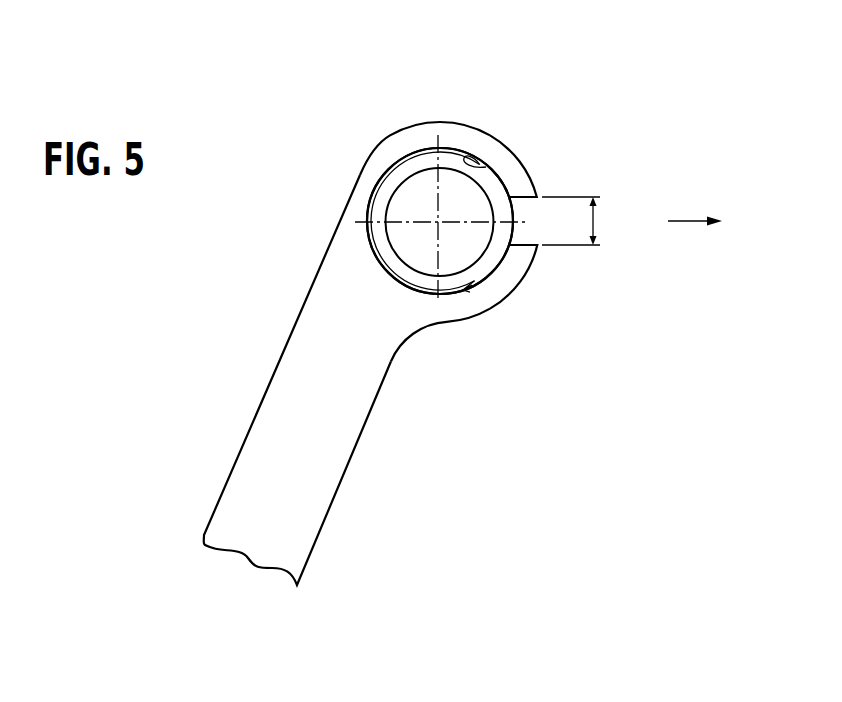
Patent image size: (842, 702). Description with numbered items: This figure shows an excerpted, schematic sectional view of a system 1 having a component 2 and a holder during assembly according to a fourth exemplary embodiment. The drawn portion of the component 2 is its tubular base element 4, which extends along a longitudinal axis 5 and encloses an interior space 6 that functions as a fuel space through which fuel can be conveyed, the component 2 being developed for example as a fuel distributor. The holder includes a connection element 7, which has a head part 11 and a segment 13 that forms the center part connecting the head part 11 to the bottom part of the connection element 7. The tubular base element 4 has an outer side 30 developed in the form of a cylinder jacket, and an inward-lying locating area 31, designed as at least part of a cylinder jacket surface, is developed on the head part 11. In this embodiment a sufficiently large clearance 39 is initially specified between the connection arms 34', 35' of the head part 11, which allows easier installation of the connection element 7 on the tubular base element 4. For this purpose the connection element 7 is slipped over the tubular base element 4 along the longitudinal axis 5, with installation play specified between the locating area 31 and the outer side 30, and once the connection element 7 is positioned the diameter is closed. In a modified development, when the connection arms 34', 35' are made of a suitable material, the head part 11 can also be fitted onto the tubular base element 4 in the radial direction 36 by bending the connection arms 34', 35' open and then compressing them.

The system 1 is at (676, 50).
The component 2 is at (403, 163).
The tubular base element 4 is at (403, 163).
The longitudinal axis 5 is at (437, 223).
The interior space 6 is at (417, 200).
The connection element 7 is at (342, 318).
The head part 11 is at (452, 130).
The segment 13 is at (300, 446).
The outer side 30 is at (467, 290).
The locating area 31 is at (493, 162).
The connection arm 34' is at (547, 166).
The connection arm 35' is at (539, 296).
The radial direction 36 is at (692, 220).
The clearance 39 is at (597, 220).